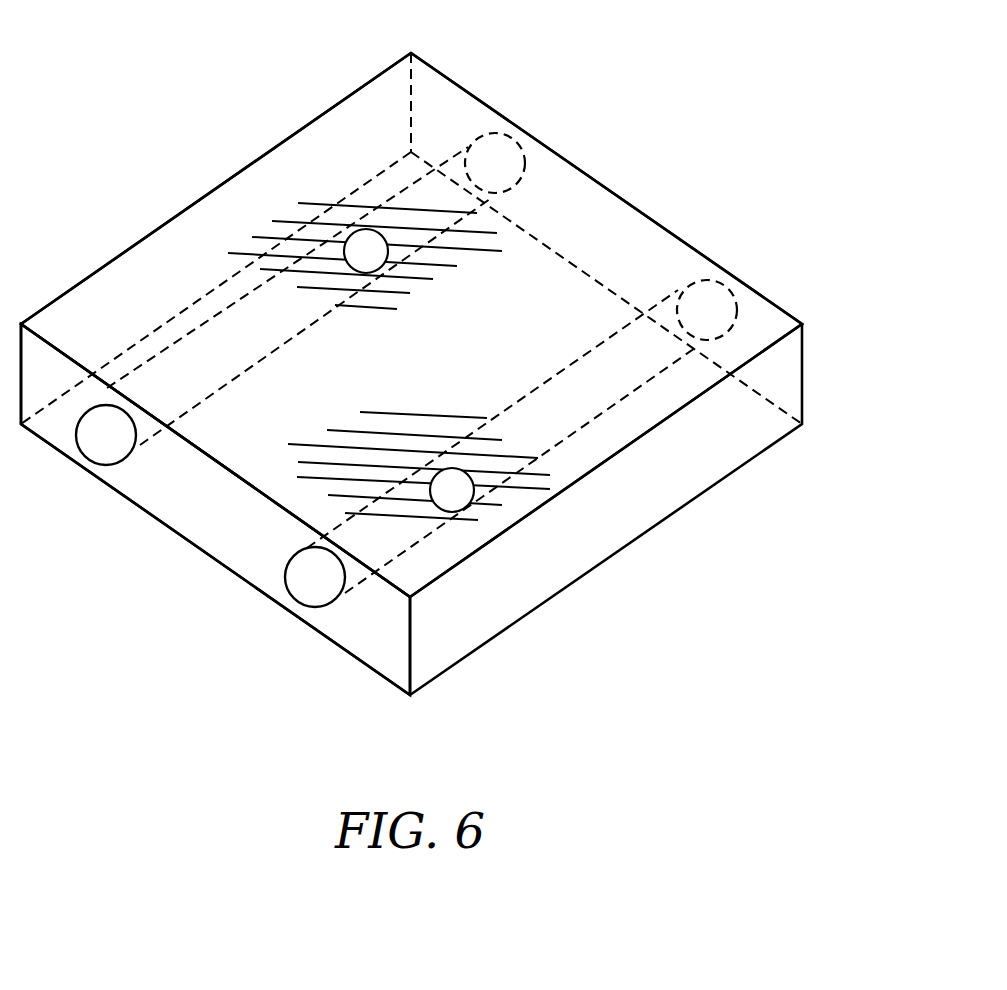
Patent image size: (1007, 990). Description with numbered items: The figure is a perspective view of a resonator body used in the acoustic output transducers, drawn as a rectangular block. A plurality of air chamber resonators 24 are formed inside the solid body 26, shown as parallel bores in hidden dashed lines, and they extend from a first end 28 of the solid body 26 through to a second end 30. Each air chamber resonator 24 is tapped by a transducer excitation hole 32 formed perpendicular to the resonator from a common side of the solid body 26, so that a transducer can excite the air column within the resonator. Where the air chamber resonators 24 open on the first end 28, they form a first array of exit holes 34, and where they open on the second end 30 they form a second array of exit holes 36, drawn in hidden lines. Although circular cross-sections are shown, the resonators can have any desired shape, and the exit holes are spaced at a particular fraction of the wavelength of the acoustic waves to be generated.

The air chamber resonator 24 is at (202, 354).
The solid body 26 is at (108, 286).
The first end 28 is at (370, 656).
The second end 30 is at (466, 401).
The transducer excitation hole 32 is at (360, 238).
The first array of exit holes 34 is at (102, 449).
The second array of exit holes 36 is at (503, 146).